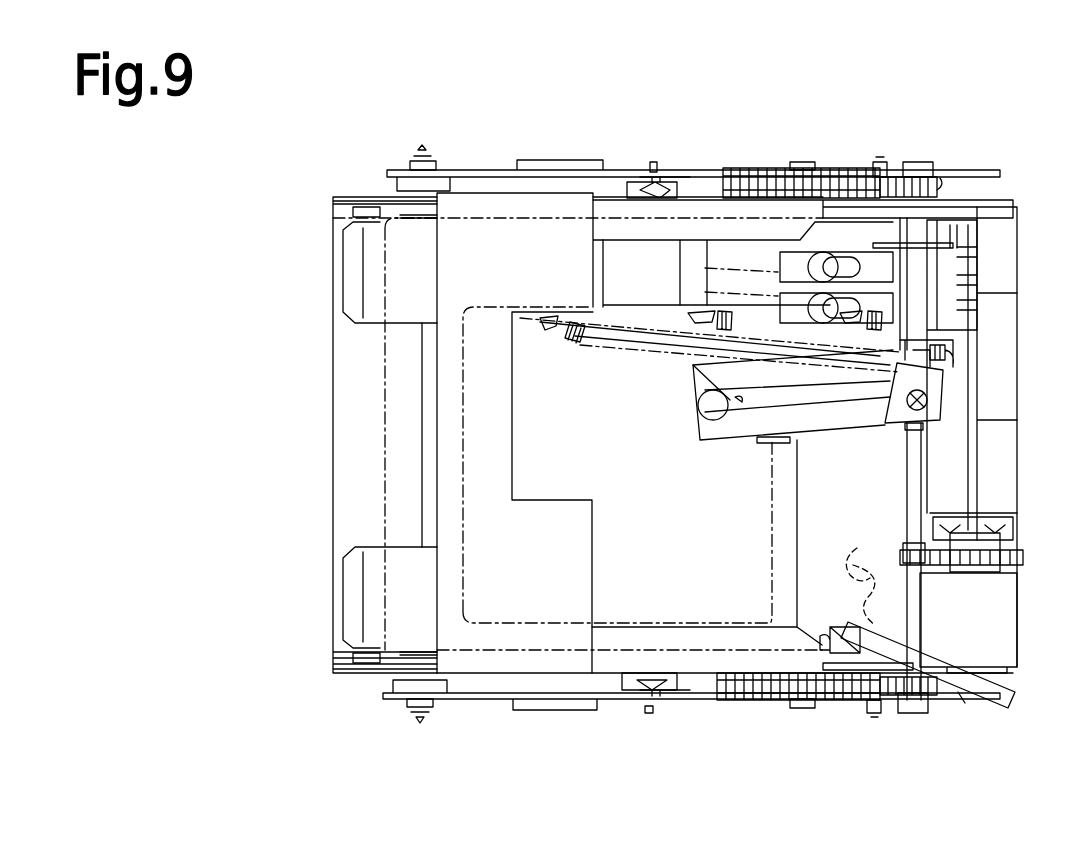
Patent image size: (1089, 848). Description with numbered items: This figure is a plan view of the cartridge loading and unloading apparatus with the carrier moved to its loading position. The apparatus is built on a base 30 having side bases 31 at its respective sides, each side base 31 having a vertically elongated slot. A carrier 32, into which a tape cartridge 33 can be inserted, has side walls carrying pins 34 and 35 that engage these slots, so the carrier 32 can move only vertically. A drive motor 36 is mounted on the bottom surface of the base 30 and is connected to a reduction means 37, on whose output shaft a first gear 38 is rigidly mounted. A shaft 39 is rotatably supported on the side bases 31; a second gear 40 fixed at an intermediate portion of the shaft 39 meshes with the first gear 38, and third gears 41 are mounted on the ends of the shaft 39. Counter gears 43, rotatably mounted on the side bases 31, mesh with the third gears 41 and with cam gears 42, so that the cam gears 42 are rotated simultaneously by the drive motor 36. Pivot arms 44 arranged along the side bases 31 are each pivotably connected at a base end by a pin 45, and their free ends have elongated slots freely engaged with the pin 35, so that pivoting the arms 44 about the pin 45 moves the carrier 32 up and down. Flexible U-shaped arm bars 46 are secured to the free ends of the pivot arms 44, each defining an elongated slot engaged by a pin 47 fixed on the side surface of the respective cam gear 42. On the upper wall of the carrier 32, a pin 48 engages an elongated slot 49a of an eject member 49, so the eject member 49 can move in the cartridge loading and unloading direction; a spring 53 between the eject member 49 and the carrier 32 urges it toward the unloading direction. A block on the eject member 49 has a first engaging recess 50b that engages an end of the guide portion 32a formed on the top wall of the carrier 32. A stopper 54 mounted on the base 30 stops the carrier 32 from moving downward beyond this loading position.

The base 30 is at (335, 526).
The side base 31 is at (693, 675).
The carrier 32 is at (603, 613).
The guide portion 32a is at (880, 362).
The tape cartridge 33 is at (383, 470).
The pin 34 is at (672, 180).
The pin 35 is at (653, 162).
The drive motor 36 is at (1020, 345).
The reduction means 37 is at (1017, 430).
The first gear 38 is at (1025, 557).
The shaft 39 is at (925, 598).
The second gear 40 is at (900, 555).
The third gear 41 is at (940, 180).
The cam gear 42 is at (860, 172).
The counter gear 43 is at (888, 170).
The pivot arm 44 is at (485, 170).
The pin 45 is at (422, 158).
The flexible arm bar 46 is at (748, 167).
The pin 47 is at (801, 162).
The pin 48 is at (700, 416).
The eject member 49 is at (697, 399).
The elongated slot 49a is at (695, 363).
The first engaging recess 50b is at (892, 422).
The spring 53 is at (582, 302).
The stopper 54 is at (862, 618).